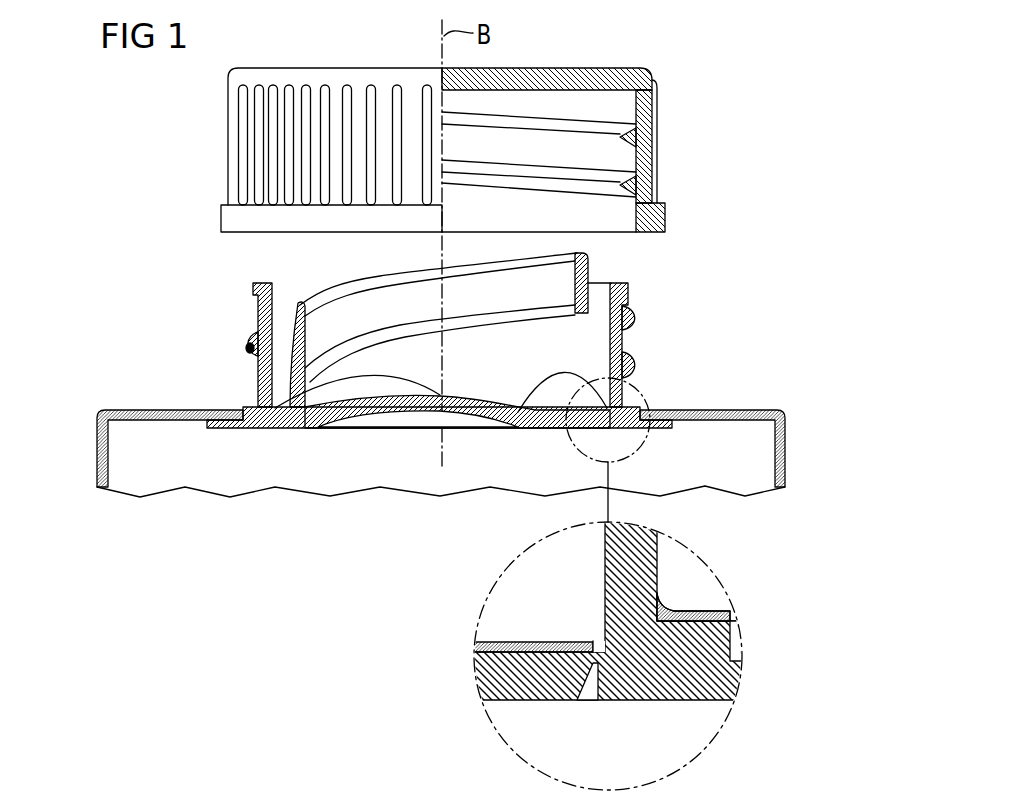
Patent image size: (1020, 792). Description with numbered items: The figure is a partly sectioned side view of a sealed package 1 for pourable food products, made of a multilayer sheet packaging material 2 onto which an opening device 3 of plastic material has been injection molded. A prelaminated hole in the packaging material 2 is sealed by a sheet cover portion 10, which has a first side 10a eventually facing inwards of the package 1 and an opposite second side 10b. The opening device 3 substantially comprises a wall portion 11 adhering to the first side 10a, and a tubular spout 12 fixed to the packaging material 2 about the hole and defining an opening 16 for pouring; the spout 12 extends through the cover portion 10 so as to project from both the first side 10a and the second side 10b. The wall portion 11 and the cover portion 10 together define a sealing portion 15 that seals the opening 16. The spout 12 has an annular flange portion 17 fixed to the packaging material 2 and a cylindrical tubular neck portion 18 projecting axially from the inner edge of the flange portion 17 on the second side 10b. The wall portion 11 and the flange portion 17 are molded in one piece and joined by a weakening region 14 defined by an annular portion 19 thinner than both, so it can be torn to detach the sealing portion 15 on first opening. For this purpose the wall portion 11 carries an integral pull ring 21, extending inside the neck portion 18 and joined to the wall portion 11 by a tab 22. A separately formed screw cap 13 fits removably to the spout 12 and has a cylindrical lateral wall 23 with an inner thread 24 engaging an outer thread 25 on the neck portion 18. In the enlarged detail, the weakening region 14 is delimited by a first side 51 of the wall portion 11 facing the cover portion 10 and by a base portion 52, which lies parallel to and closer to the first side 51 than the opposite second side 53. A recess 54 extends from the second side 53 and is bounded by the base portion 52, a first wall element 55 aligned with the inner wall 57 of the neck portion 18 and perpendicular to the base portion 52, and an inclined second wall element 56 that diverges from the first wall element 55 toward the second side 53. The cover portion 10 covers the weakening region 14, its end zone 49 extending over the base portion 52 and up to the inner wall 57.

The sealed package 1 is at (749, 125).
The multilayer sheet packaging material 2 is at (153, 397).
The opening device 3 is at (238, 293).
The cover portion 10 is at (504, 389).
The first side of the cover portion 10a is at (518, 424).
The second side of the cover portion 10b is at (548, 402).
The wall portion 11 is at (417, 420).
The tubular spout 12 is at (640, 372).
The cap 13 is at (603, 78).
The weakening region 14 is at (278, 408).
The sealing portion 15 is at (428, 380).
The opening 16 is at (285, 305).
The annular flange portion 17 is at (210, 427).
The cylindrical tubular neck portion 18 is at (256, 377).
The annular portion 19 is at (272, 440).
The pull ring 21 is at (484, 300).
The tab 22 is at (295, 430).
The cylindrical lateral wall 23 is at (654, 162).
The inner thread 24 is at (580, 184).
The outer thread 25 is at (250, 342).
The end zone 49 is at (595, 640).
The first side of the wall portion 51 is at (516, 645).
The base portion 52 is at (598, 672).
The second side of the wall portion 53 is at (505, 700).
The recess 54 is at (591, 715).
The first wall element 55 is at (616, 690).
The second wall element 56 is at (580, 700).
The inner wall 57 is at (604, 548).